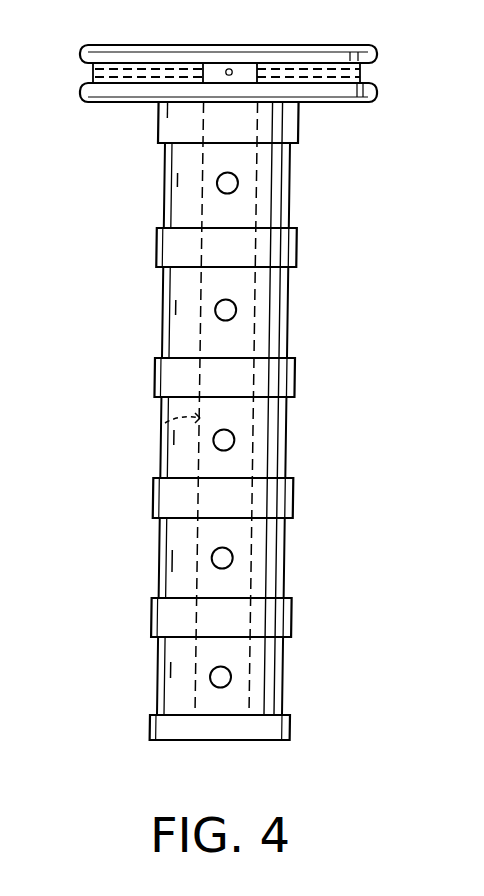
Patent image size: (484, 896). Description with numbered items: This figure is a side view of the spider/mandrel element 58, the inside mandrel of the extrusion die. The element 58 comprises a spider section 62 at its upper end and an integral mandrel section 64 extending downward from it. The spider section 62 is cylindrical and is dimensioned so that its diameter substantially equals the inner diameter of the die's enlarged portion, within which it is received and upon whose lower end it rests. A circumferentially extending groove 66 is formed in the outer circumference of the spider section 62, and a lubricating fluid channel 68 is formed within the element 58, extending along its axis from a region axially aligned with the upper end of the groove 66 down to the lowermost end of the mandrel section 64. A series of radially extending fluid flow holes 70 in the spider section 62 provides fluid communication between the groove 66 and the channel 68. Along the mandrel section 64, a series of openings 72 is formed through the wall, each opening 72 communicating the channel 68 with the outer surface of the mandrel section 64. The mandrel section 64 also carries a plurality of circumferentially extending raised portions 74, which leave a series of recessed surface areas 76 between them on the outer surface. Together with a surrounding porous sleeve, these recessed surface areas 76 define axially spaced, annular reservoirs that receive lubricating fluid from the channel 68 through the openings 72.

The spider/mandrel element 58 is at (365, 240).
The spider section 62 is at (100, 55).
The mandrel section 64 is at (272, 740).
The circumferentially extending groove 66 is at (363, 82).
The lubricating fluid channel 68 is at (165, 423).
The fluid flow holes 70 is at (229, 68).
The openings 72 is at (217, 184).
The raised portions 74 is at (187, 128).
The recessed surface areas 76 is at (305, 190).